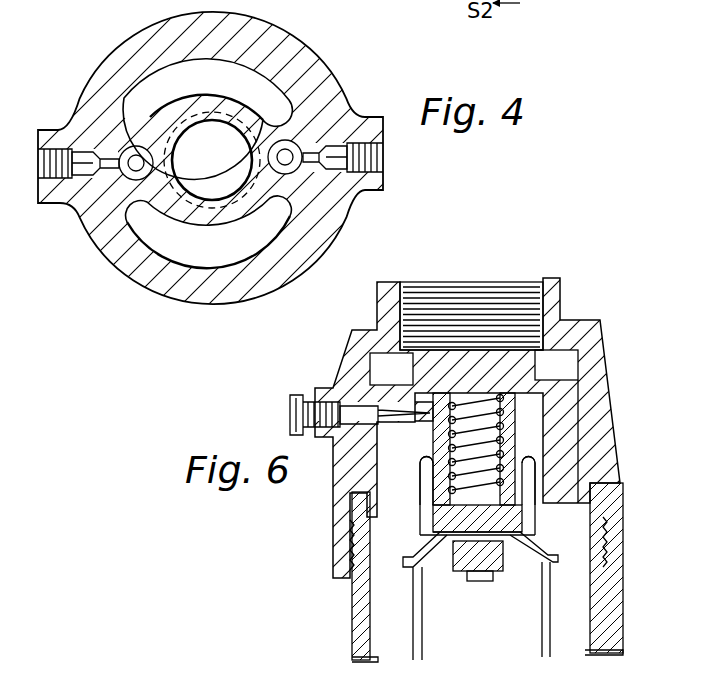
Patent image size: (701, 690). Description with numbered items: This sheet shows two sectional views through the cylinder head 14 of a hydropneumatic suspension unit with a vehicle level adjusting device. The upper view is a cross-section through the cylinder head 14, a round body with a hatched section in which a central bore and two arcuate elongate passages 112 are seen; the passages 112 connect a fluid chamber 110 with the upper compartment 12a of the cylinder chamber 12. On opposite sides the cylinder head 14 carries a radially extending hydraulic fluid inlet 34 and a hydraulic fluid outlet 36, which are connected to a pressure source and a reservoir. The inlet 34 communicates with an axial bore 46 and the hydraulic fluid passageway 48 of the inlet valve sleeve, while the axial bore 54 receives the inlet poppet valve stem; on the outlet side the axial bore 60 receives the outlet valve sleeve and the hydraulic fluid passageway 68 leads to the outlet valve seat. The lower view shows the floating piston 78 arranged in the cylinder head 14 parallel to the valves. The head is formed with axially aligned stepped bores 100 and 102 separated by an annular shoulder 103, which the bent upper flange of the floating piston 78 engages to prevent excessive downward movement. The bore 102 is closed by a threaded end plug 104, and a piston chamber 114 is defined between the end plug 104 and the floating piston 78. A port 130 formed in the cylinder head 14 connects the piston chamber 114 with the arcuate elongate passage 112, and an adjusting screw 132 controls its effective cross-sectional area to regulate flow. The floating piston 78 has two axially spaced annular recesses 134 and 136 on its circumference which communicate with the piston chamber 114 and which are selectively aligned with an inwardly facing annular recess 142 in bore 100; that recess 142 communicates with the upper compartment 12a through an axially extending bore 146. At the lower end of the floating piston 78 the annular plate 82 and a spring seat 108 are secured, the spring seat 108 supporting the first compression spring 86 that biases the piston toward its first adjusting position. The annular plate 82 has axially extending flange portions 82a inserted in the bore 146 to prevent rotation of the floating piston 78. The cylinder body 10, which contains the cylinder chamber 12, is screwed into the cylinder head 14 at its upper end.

In FIG. 4, the cylinder head 14 is at (253, 302).
In FIG. 6, the cylinder head 14 is at (560, 298).
In FIG. 4, the stepped bore 102 is at (185, 208).
In FIG. 6, the stepped bore 102 is at (430, 365).
In FIG. 4, the axial bore 60 is at (308, 128).
In FIG. 4, the arcuate elongate passage 112 is at (255, 252).
In FIG. 6, the arcuate elongate passage 112 is at (378, 387).
In FIG. 4, the axial bore 54 is at (122, 158).
In FIG. 4, the hydraulic fluid passageway 68 is at (290, 165).
In FIG. 4, the hydraulic fluid inlet 34 is at (50, 130).
In FIG. 4, the hydraulic fluid outlet 36 is at (384, 157).
In FIG. 4, the axial bore 46 is at (88, 216).
In FIG. 4, the stepped bore 100 is at (150, 202).
In FIG. 6, the stepped bore 100 is at (548, 437).
In FIG. 4, the hydraulic fluid passageway 48 is at (463, 4).
In FIG. 6, the end plug 104 is at (512, 348).
In FIG. 6, the port 130 is at (420, 405).
In FIG. 6, the adjusting screw 132 is at (323, 397).
In FIG. 6, the annular recess 134 is at (400, 421).
In FIG. 6, the piston chamber 114 is at (485, 441).
In FIG. 6, the annular plate 82 is at (430, 540).
In FIG. 6, the flange portion 82a is at (420, 517).
In FIG. 6, the inwardly facing annular recess 142 is at (457, 482).
In FIG. 6, the spring seat 108 is at (458, 545).
In FIG. 6, the first compression spring 86 is at (552, 624).
In FIG. 6, the annular recess 136 is at (460, 572).
In FIG. 6, the cylinder body 10 is at (352, 637).
In FIG. 6, the cylinder chamber 12 is at (590, 600).
In FIG. 6, the upper compartment 12a is at (493, 653).
In FIG. 6, the fluid chamber 110 is at (557, 362).
In FIG. 6, the annular shoulder 103 is at (548, 427).
In FIG. 6, the floating piston 78 is at (548, 452).
In FIG. 6, the axially extending bore 146 is at (548, 478).